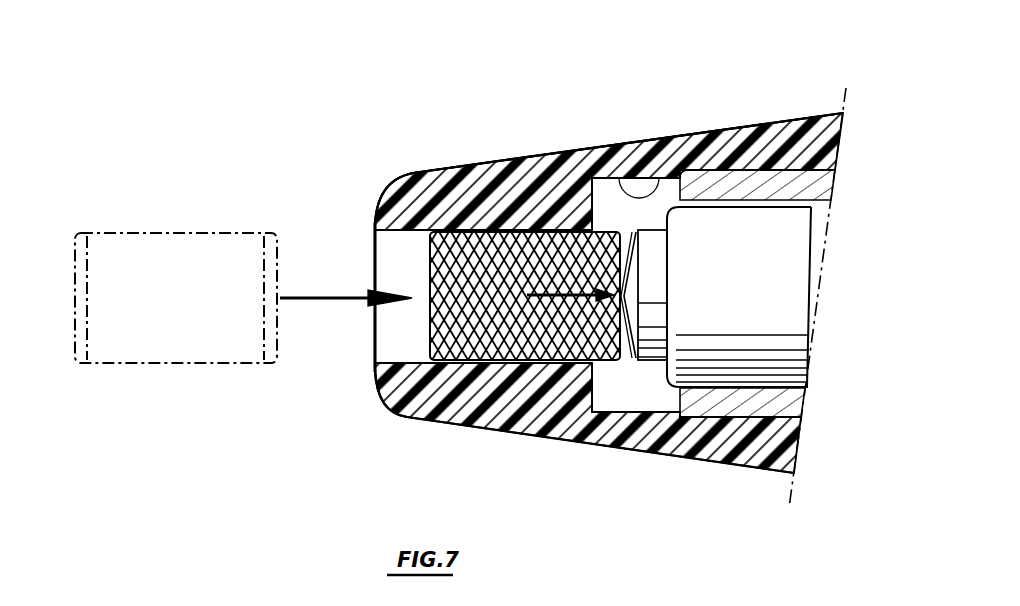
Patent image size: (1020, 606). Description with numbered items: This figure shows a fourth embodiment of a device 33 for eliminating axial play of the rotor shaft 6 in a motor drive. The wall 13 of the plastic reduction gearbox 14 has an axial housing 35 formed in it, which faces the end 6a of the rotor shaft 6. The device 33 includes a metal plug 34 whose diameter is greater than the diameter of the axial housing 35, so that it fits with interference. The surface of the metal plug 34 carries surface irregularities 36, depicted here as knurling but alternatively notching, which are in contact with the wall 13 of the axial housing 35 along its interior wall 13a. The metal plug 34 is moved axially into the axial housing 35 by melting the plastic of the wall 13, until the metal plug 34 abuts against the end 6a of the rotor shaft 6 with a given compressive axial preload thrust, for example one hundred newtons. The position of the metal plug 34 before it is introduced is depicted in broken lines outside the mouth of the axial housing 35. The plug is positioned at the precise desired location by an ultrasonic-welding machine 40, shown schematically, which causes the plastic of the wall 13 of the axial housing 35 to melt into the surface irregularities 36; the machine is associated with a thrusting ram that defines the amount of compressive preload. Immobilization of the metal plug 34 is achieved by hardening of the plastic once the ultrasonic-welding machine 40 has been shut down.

The rotor shaft 6 is at (770, 321).
The end of the rotor shaft 6a is at (640, 362).
The wall of the reduction gearbox 13 is at (505, 161).
The interior wall 13a is at (610, 182).
The reduction gearbox 14 is at (780, 110).
The device for eliminating the play 33 is at (615, 386).
The metal plug 34 is at (416, 333).
The axial housing 35 is at (376, 248).
The surface irregularities 36 is at (423, 418).
The ultrasonic-welding machine 40 is at (438, 173).